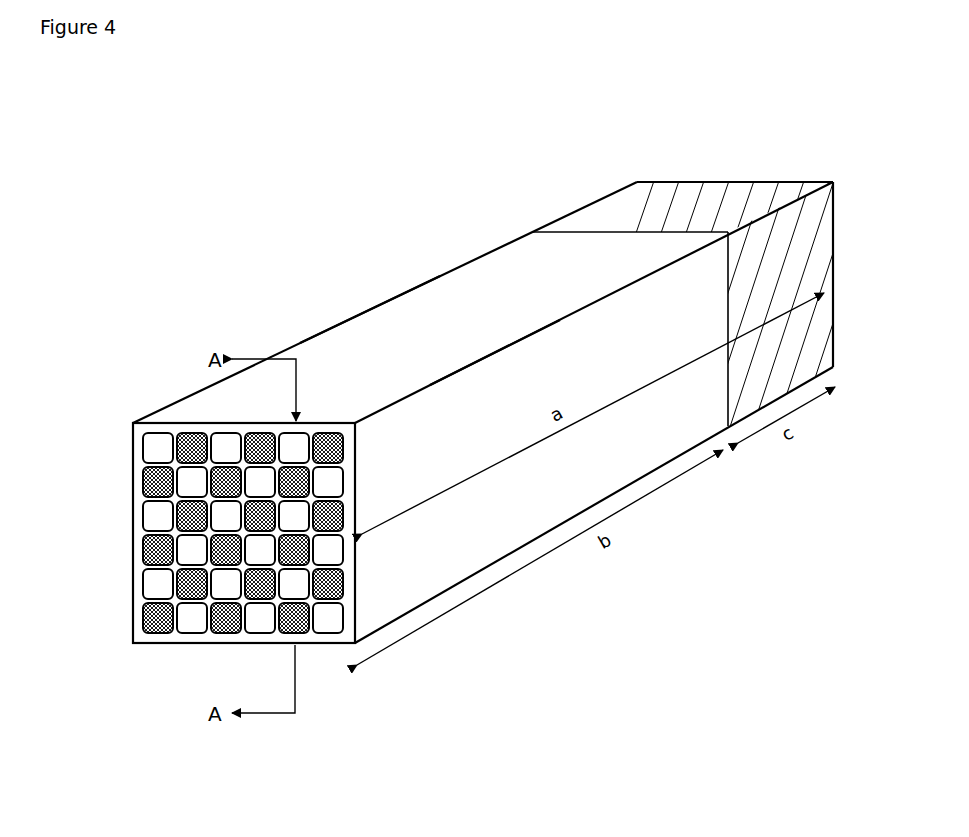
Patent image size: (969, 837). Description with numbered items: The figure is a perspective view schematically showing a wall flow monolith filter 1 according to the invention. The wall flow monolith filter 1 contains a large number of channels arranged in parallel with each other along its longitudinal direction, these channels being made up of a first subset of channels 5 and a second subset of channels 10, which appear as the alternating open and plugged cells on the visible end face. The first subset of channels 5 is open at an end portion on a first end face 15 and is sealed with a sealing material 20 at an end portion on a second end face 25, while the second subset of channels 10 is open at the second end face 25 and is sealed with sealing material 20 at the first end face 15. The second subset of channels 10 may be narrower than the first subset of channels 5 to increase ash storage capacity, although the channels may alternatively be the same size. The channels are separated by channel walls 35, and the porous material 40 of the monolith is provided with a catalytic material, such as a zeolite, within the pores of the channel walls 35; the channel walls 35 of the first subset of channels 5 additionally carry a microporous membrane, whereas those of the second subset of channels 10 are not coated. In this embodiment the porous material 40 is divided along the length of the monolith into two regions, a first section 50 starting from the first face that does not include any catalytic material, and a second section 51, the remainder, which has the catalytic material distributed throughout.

The wall flow monolith filter 1 is at (370, 252).
The first subset of channels 5 is at (158, 552).
The second subset of channels 10 is at (196, 628).
The first end face 15 is at (738, 182).
The sealing material 20 is at (156, 622).
The second end face 25 is at (140, 466).
The channel walls 35 is at (324, 628).
The porous material 40 is at (427, 315).
The first section 50 is at (598, 224).
The second section 51 is at (494, 270).